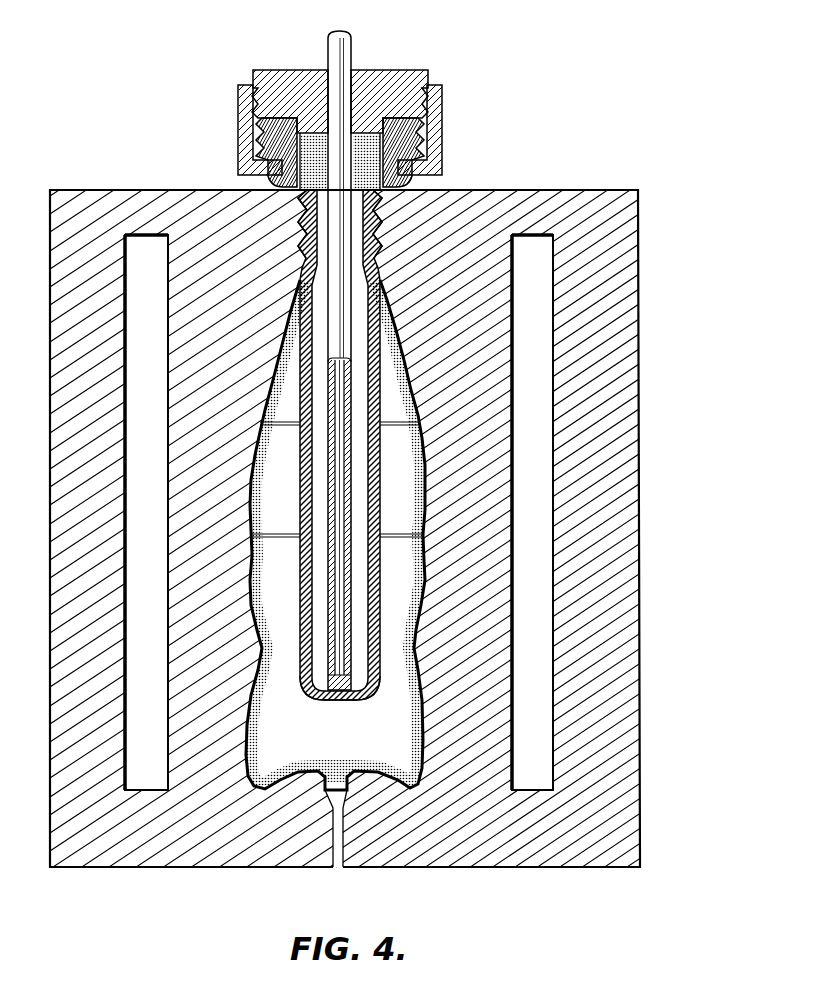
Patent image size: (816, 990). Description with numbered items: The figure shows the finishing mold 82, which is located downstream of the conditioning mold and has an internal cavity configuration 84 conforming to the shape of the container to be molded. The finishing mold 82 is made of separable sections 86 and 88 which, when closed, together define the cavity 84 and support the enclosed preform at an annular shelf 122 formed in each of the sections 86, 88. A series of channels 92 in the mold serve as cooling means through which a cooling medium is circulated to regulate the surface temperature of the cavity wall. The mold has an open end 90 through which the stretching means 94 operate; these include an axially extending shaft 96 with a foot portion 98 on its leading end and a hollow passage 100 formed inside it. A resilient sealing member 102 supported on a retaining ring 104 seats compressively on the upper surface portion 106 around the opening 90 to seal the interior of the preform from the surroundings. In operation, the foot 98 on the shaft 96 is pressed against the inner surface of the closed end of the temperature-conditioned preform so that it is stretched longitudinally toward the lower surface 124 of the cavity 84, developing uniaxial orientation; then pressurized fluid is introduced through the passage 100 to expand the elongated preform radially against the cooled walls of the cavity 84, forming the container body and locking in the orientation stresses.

The finishing mold 82 is at (702, 237).
The internal cavity configuration 84 is at (291, 763).
The separable section 86 is at (540, 217).
The separable section 88 is at (175, 202).
The open end 90 is at (360, 192).
The channels 92 is at (540, 330).
The stretching means 94 is at (528, 108).
The shaft 96 is at (347, 498).
The foot portion 98 is at (347, 697).
The hollow passage 100 is at (335, 603).
The resilient sealing member 102 is at (410, 147).
The retaining ring 104 is at (248, 160).
The upper surface portion 106 is at (442, 188).
The annular shelf 122 is at (300, 242).
The lower surface 124 is at (267, 780).